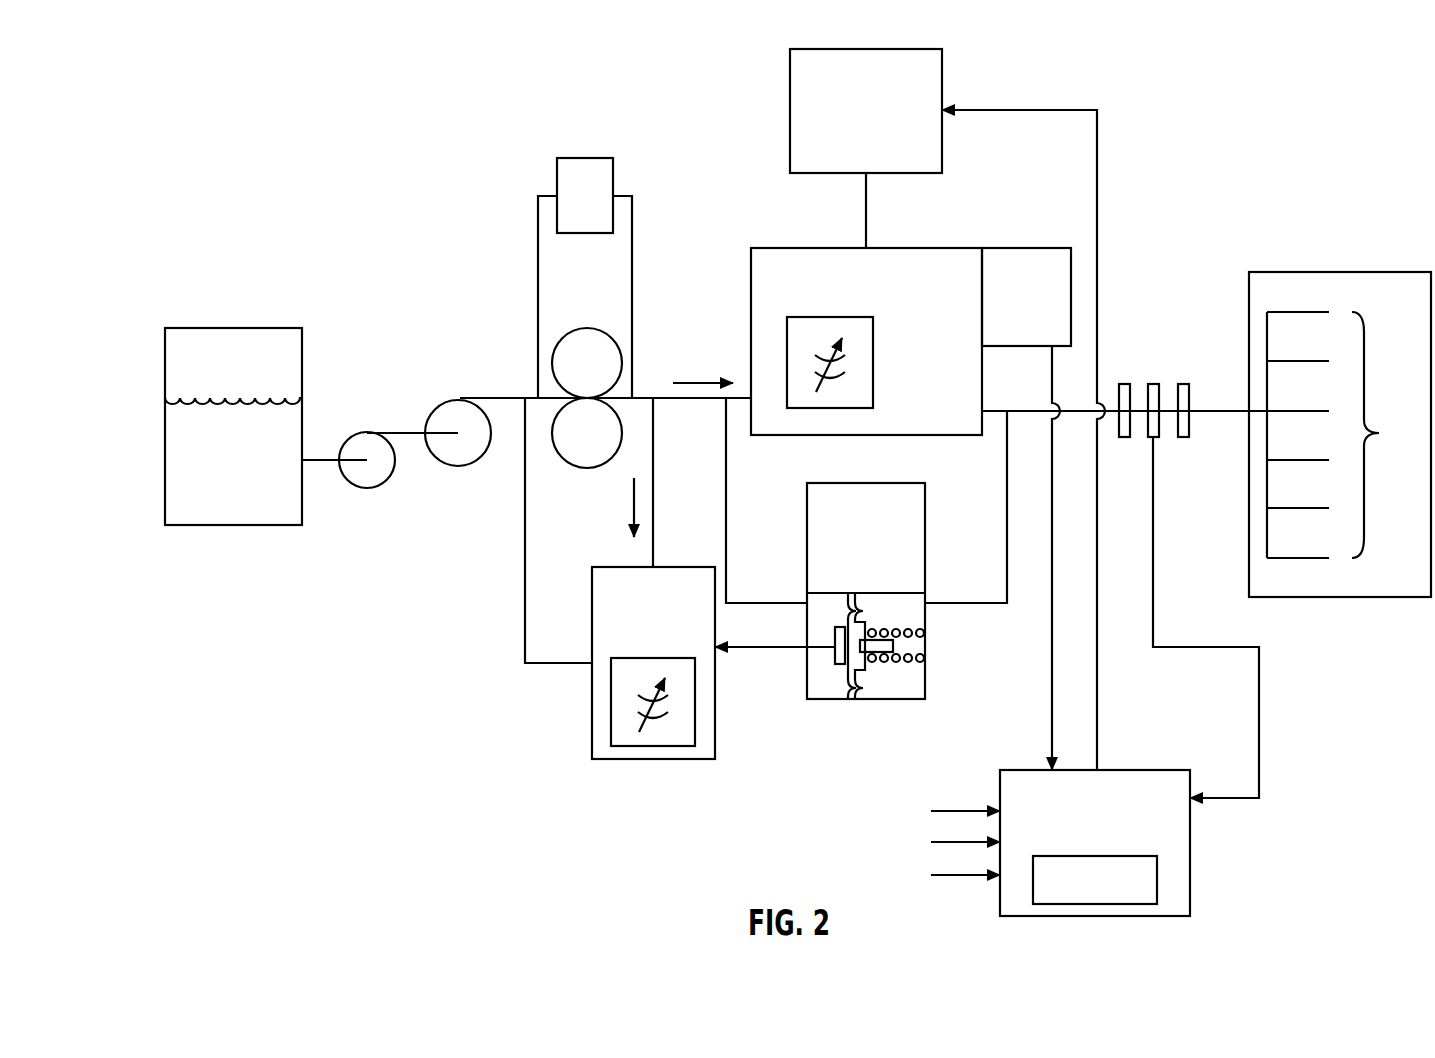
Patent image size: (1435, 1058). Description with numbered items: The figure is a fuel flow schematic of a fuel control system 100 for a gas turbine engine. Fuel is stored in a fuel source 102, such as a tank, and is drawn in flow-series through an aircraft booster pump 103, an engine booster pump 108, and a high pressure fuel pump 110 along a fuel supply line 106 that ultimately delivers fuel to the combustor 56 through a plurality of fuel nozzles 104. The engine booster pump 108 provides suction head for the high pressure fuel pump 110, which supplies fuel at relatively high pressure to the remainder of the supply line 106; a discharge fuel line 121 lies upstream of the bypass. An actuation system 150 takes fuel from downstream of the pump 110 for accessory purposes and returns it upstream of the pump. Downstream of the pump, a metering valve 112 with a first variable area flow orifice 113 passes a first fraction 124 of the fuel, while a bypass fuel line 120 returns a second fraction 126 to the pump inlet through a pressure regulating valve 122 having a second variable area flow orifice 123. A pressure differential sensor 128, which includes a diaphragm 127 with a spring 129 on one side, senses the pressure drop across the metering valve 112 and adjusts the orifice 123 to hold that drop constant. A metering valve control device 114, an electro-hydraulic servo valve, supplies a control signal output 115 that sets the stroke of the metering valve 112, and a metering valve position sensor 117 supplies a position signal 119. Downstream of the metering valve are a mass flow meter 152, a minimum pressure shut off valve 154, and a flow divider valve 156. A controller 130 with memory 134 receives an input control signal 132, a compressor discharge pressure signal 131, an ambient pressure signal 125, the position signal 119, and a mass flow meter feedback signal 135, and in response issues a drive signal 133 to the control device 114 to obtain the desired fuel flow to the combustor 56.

The fuel control system 100 is at (181, 84).
The fuel source 102 is at (185, 328).
The aircraft booster pump 103 is at (367, 488).
The fuel nozzles 104 is at (1348, 435).
The fuel supply line 106 is at (678, 398).
The engine booster pump 108 is at (458, 466).
The high pressure fuel pump 110 is at (590, 328).
The metering valve 112 is at (773, 248).
The first variable area flow orifice 113 is at (860, 317).
The metering valve control device 114 is at (818, 49).
The metering valve control signal output 115 is at (866, 205).
The metering valve position sensor 117 is at (1000, 248).
The metering valve position signal 119 is at (1049, 670).
The bypass fuel line 120 is at (653, 522).
The discharge fuel line 121 is at (493, 398).
The pressure regulating valve 122 is at (592, 700).
The second variable area flow orifice 123 is at (625, 746).
The first fraction 124 is at (690, 383).
The ambient pressure signal 125 is at (945, 875).
The second fraction 126 is at (632, 500).
The diaphragm 127 is at (862, 699).
The pressure differential sensor 128 is at (828, 483).
The spring 129 is at (925, 677).
The controller 130 is at (1020, 770).
The compressor discharge pressure signal 131 is at (945, 842).
The input control signal 132 is at (945, 811).
The drive signal 133 is at (1098, 700).
The memory 134 is at (1125, 856).
The mass flow meter feedback signal 135 is at (1259, 758).
The actuation system 150 is at (570, 158).
The mass flow meter 152 is at (1152, 384).
The minimum pressure shut off valve 154 is at (1125, 437).
The flow divider valve 156 is at (1183, 437).
The combustor 56 is at (1265, 272).